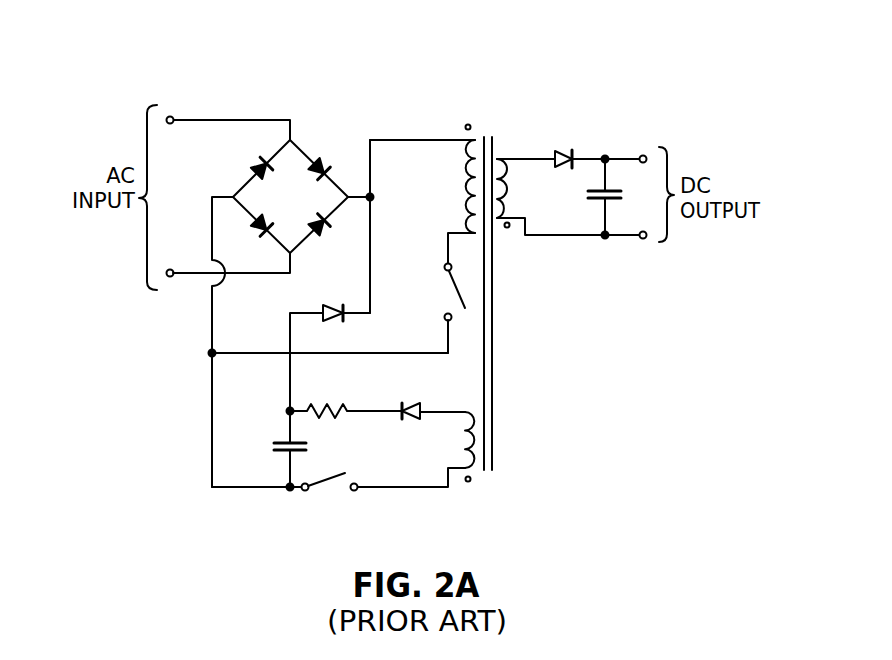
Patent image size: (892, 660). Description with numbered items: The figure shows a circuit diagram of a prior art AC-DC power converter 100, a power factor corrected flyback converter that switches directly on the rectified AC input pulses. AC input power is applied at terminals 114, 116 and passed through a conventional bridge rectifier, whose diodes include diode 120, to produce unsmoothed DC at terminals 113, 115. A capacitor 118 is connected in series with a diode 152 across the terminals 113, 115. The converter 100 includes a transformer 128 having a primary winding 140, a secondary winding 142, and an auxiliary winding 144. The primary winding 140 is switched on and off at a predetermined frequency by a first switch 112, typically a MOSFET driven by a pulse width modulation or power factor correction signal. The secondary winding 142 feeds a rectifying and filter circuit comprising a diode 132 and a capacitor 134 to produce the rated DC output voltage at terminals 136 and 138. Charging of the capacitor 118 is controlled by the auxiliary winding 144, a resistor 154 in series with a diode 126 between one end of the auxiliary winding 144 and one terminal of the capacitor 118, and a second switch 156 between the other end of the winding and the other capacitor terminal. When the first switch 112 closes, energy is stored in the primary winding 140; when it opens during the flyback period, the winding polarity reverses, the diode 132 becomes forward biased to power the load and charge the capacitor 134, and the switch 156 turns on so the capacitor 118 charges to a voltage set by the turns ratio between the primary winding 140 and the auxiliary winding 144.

The AC-DC power converter 100 is at (172, 51).
The first switch 112 is at (455, 293).
The terminal 113 is at (233, 191).
The terminal 114 is at (170, 277).
The terminal 115 is at (375, 198).
The terminal 116 is at (171, 116).
The capacitor 118 is at (276, 455).
The bridge rectifier diode 120 is at (302, 148).
The diode 126 is at (421, 408).
The transformer 128 is at (484, 137).
The diode 132 is at (572, 152).
The capacitor 134 is at (597, 200).
The terminal 136 is at (643, 155).
The terminal 138 is at (643, 239).
The primary winding 140 is at (470, 149).
The secondary winding 142 is at (499, 158).
The auxiliary winding 144 is at (474, 470).
The diode 152 is at (333, 304).
The resistor 154 is at (338, 406).
The second switch 156 is at (332, 472).